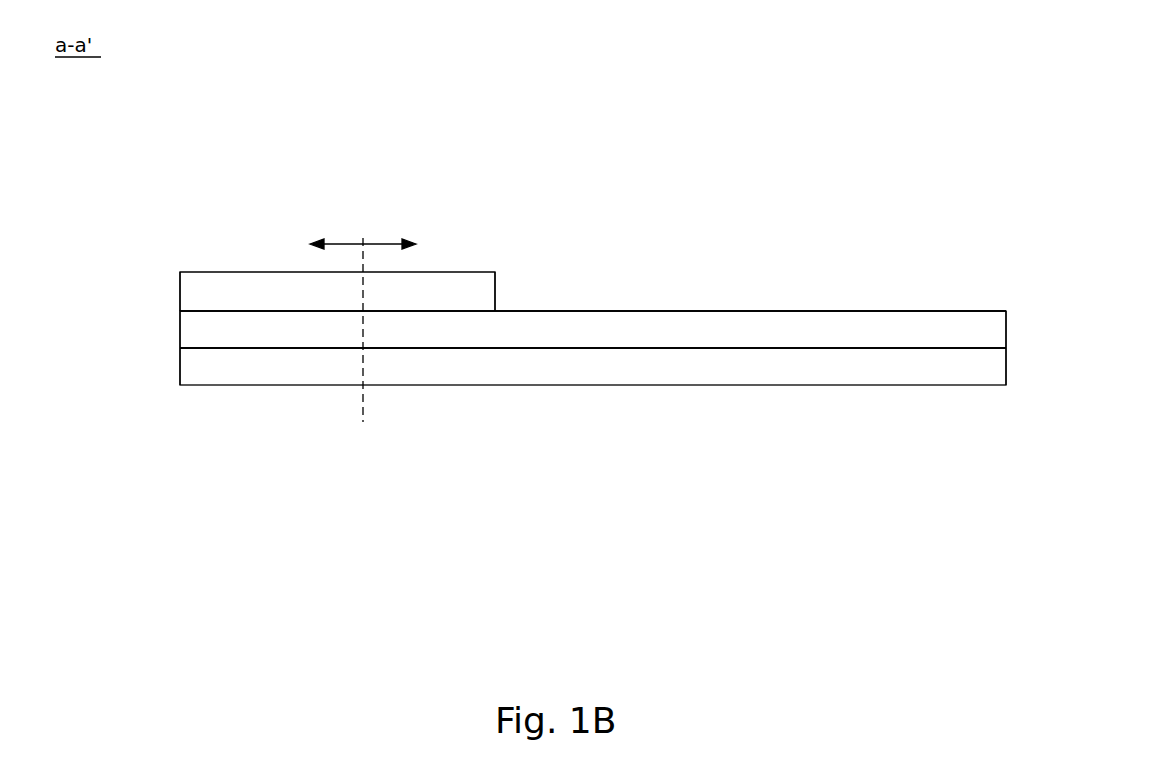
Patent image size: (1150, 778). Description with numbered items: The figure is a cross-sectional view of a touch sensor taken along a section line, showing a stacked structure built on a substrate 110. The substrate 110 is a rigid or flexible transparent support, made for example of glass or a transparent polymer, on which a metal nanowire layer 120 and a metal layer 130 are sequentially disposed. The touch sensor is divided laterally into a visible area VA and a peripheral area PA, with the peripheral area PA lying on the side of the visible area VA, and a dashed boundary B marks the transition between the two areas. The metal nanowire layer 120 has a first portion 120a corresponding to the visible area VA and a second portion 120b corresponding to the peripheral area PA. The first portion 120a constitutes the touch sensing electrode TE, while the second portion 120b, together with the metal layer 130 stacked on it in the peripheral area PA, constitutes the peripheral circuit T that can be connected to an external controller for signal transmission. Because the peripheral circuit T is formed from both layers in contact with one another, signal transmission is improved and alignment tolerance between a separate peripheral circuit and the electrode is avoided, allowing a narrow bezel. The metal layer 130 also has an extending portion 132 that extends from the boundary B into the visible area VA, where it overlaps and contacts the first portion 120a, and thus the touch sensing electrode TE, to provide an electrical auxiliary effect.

The substrate 110 is at (1000, 370).
The metal nanowire layer 120 is at (458, 452).
The first portion of the metal nanowire layer 120a is at (415, 328).
The second portion of the metal nanowire layer 120b is at (300, 328).
The metal layer 130 is at (221, 250).
The extending portion 132 is at (488, 278).
The boundary B is at (363, 317).
The peripheral area PA is at (316, 245).
The visible area VA is at (406, 245).
The peripheral circuit T is at (161, 296).
The touch sensing electrode TE is at (1034, 330).